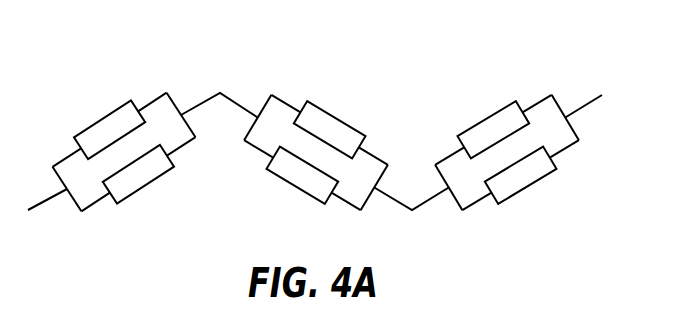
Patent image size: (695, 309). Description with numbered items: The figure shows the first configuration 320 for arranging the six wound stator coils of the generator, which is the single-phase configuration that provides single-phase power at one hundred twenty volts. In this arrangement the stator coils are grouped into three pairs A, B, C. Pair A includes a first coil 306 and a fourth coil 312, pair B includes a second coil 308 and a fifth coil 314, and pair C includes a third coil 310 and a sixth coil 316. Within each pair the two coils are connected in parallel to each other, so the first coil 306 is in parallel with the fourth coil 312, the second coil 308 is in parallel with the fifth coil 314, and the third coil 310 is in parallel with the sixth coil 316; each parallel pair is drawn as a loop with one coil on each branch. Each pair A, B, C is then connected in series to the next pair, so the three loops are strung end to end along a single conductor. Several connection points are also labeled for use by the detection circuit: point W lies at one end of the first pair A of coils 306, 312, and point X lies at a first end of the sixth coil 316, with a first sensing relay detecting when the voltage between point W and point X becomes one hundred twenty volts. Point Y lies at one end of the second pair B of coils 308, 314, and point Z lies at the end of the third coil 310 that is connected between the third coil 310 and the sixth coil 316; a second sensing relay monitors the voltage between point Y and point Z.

The first configuration 320 is at (348, 133).
The first coil 306 is at (103, 132).
The fourth coil 312 is at (137, 180).
The second coil 308 is at (333, 122).
The fifth coil 314 is at (298, 180).
The third coil 310 is at (495, 125).
The sixth coil 316 is at (527, 178).
The pair A is at (113, 141).
The pair B is at (322, 137).
The pair C is at (549, 158).
The point W is at (198, 110).
The point X is at (478, 205).
The point Y is at (373, 152).
The point Z is at (445, 155).